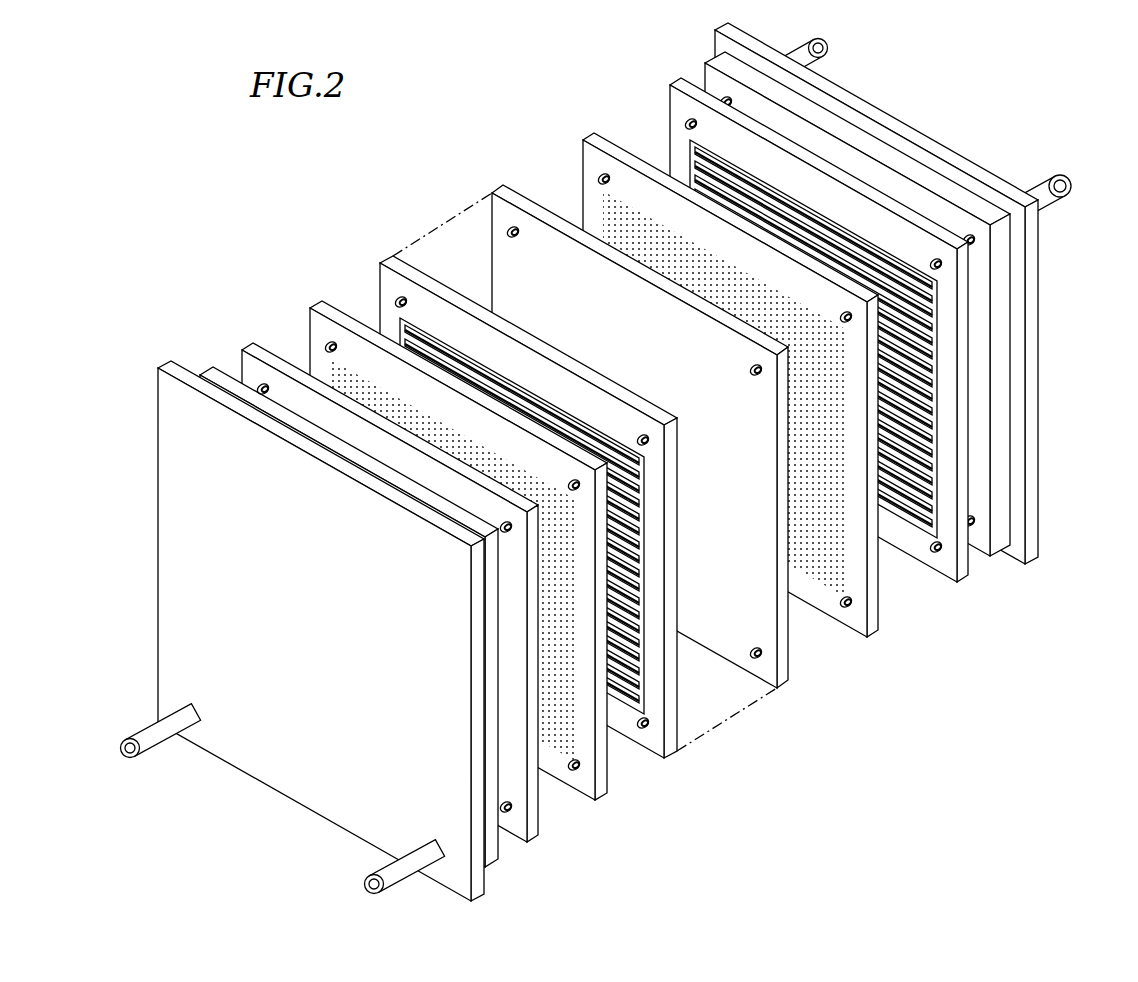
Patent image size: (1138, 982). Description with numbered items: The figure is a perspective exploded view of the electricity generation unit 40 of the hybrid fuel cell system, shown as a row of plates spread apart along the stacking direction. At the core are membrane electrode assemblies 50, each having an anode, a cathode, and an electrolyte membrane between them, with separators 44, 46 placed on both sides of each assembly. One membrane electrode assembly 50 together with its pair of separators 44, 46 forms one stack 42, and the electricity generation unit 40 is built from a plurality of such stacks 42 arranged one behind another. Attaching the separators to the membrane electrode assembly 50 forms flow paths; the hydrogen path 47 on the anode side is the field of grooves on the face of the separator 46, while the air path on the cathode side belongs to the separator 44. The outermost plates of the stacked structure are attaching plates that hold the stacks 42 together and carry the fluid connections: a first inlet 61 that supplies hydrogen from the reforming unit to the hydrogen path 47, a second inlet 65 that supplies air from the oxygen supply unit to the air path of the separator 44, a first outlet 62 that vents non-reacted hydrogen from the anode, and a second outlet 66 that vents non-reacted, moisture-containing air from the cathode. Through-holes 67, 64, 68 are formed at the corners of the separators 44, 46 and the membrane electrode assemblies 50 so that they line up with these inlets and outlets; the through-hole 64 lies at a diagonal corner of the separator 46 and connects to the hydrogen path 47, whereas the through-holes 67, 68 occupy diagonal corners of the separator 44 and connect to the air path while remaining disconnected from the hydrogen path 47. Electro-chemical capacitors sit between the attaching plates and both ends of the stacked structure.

The electricity generation unit 40 is at (963, 111).
The stack 42 is at (788, 403).
The separator 44 is at (663, 456).
The separator 46 is at (877, 347).
The hydrogen path 47 is at (936, 389).
The membrane electrode assembly 50 is at (878, 632).
The first inlet 61 is at (143, 727).
The first outlet 62 is at (1070, 200).
The through-hole 64 is at (931, 261).
The second inlet 65 is at (382, 862).
The second outlet 66 is at (826, 50).
The through-hole 67 is at (932, 553).
The through-hole 68 is at (686, 126).